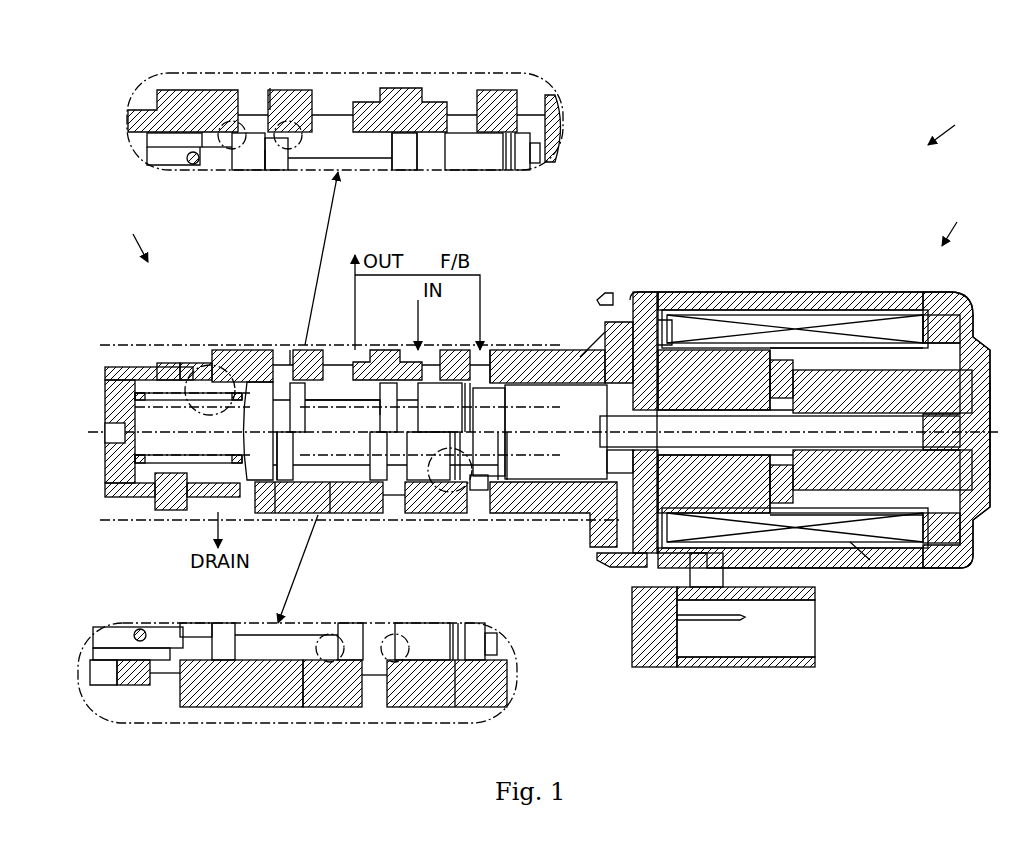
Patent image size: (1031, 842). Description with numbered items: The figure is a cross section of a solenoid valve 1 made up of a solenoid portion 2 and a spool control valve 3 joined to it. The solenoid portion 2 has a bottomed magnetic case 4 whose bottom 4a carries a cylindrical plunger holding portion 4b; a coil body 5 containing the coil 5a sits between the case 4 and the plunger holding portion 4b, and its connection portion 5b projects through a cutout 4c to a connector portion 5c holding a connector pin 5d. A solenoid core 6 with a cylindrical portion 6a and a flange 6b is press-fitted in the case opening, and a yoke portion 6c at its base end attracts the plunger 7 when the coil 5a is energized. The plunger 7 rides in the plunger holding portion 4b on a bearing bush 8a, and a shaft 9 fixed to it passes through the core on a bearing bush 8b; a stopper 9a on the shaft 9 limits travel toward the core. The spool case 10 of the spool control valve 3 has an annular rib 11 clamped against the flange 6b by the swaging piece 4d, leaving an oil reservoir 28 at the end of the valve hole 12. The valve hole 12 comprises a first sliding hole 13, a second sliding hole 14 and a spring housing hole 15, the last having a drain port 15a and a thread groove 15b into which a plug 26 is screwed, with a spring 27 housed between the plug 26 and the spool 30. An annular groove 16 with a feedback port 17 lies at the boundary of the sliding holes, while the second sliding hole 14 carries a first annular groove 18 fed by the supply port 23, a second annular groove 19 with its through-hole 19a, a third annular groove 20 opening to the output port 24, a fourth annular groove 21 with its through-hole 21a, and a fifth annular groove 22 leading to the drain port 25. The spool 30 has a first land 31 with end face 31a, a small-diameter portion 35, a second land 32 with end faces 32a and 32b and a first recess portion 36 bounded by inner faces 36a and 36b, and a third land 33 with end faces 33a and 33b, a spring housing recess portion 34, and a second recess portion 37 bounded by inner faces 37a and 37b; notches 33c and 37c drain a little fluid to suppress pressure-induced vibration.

The solenoid valve 1 is at (950, 123).
The solenoid portion 2 is at (957, 221).
The spool control valve 3 is at (136, 236).
The case 4 is at (955, 292).
The bottom 4a is at (990, 420).
The plunger holding portion 4b is at (930, 330).
The cutout 4c is at (718, 570).
The swaging piece 4d is at (600, 293).
The coil body 5 is at (862, 316).
The coil 5a is at (828, 312).
The connection portion 5b is at (640, 567).
The connector portion 5c is at (740, 667).
The connector pin 5d is at (735, 620).
The solenoid core 6 is at (712, 360).
The cylindrical portion 6a is at (748, 358).
The flange 6b is at (645, 300).
The yoke portion 6c is at (780, 362).
The plunger 7 is at (975, 380).
The bearing bush 8a is at (960, 352).
The bearing bush 8b is at (680, 355).
The shaft 9 is at (962, 440).
The stopper 9a is at (845, 555).
The spool case 10 is at (110, 367).
The annular rib 11 is at (603, 330).
The valve hole 12 is at (550, 360).
The first sliding hole 13 is at (500, 365).
The second sliding hole 14 is at (375, 355).
The spring housing hole 15 is at (182, 365).
The drain port 15a is at (195, 497).
The thread groove 15b is at (160, 370).
The annular groove 16 is at (505, 513).
The feedback port 17 is at (495, 350).
The first annular groove 18 is at (440, 513).
The second annular groove 19 is at (390, 350).
The through-hole 19a is at (392, 500).
The third annular groove 20 is at (352, 513).
The fourth annular groove 21 is at (242, 113).
The through-hole 21a is at (270, 86).
The fifth annular groove 22 is at (230, 352).
The supply port 23 is at (452, 352).
The output port 24 is at (312, 352).
The drain port 25 is at (262, 513).
The plug 26 is at (105, 400).
The spring 27 is at (160, 500).
The oil reservoir 28 is at (620, 461).
The spool 30 is at (580, 478).
The first land 31 is at (540, 480).
The end face 31a is at (505, 405).
The second land 32 is at (420, 482).
The end face 32a is at (465, 400).
The end face 32b is at (392, 158).
The third land 33 is at (330, 515).
The end face 33a is at (306, 392).
The end face 33b is at (150, 140).
The notch 33c is at (308, 420).
The spring housing recess portion 34 is at (212, 462).
The small-diameter portion 35 is at (478, 490).
The first recess portion 36 is at (408, 445).
The inner face 36a is at (445, 165).
The inner face 36b is at (400, 170).
The second recess portion 37 is at (293, 445).
The inner face 37a is at (265, 152).
The inner face 37b is at (280, 383).
The notch 37c is at (250, 430).